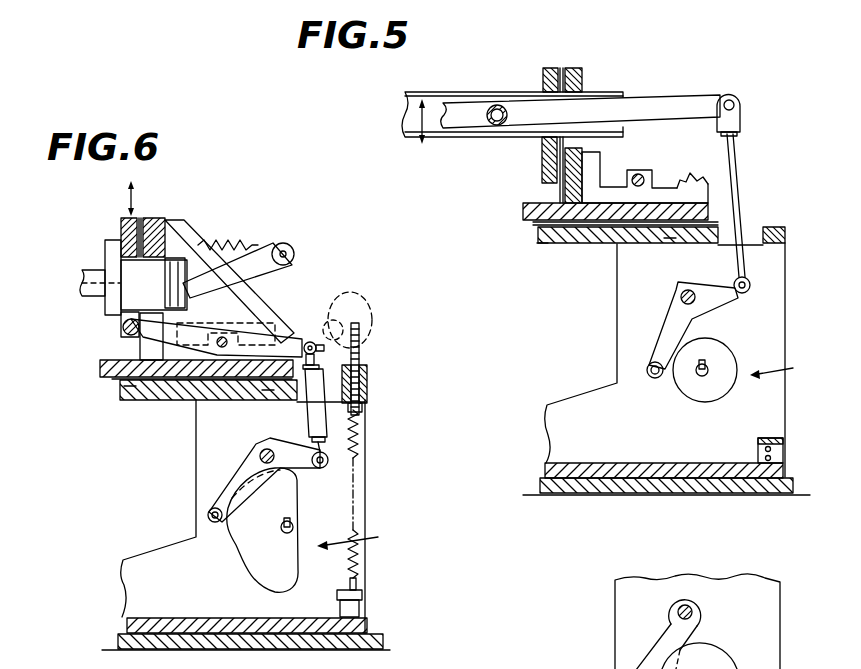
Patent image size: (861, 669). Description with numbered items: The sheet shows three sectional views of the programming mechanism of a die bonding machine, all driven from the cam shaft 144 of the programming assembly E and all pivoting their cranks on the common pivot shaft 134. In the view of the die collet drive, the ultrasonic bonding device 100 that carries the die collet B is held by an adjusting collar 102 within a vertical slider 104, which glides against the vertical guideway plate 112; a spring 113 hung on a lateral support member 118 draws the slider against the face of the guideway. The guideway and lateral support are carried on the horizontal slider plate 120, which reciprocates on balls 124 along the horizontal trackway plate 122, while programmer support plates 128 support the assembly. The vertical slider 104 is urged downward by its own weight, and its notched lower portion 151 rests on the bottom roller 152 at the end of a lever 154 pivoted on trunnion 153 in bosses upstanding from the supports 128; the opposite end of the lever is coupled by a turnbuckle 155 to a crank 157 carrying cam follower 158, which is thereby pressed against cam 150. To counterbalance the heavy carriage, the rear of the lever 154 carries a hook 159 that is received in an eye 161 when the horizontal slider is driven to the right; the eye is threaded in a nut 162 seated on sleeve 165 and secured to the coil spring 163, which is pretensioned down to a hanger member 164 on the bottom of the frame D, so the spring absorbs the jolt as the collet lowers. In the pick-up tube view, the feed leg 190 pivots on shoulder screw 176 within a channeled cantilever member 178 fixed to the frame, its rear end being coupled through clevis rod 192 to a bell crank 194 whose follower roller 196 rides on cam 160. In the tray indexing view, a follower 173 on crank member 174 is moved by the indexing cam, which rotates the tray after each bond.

In FIG. 6, the ultrasonic energy vibratory device 100 is at (160, 292).
In FIG. 6, the adjusting collar 102 is at (106, 245).
In FIG. 6, the vertical slider 104 is at (120, 222).
In FIG. 5, the vertical slider 104 is at (546, 67).
In FIG. 6, the vertical guideway plate 112 is at (152, 222).
In FIG. 5, the vertical guideway plate 112 is at (578, 67).
In FIG. 6, the spring 113 is at (263, 233).
In FIG. 6, the lateral support member 118 is at (295, 257).
In FIG. 5, the lateral support member 118 is at (713, 158).
In FIG. 6, the horizontal slider plate 120 is at (100, 370).
In FIG. 5, the horizontal slider plate 120 is at (523, 210).
In FIG. 6, the horizontal trackway plate 122 is at (112, 397).
In FIG. 5, the horizontal trackway plate 122 is at (538, 238).
In FIG. 6, the balls 124 is at (130, 388).
In FIG. 5, the balls 124 is at (542, 243).
In FIG. 6, the programmer support plate 128 is at (125, 587).
In FIG. 5, the programmer support plate 128 is at (584, 399).
In FIG. 6, the pivot shaft 134 is at (260, 451).
In FIG. 5, the pivot shaft 134 is at (682, 293).
In FIG. 8, the pivot shaft 134 is at (693, 611).
In FIG. 6, the cam shaft 144 is at (295, 519).
In FIG. 5, the cam shaft 144 is at (707, 363).
In FIG. 8, the cam shaft 144 is at (727, 668).
In FIG. 6, the cam 150 is at (252, 555).
In FIG. 6, the notched lower portion 151 is at (121, 322).
In FIG. 6, the bottom roller 152 is at (130, 337).
In FIG. 6, the trunnion 153 is at (226, 312).
In FIG. 5, the trunnion 153 is at (656, 152).
In FIG. 6, the lever 154 is at (263, 328).
In FIG. 6, the turnbuckle 155 is at (360, 337).
In FIG. 6, the crank 157 is at (236, 472).
In FIG. 6, the cam follower 158 is at (208, 515).
In FIG. 6, the hook 159 is at (372, 318).
In FIG. 5, the cam 160 is at (707, 402).
In FIG. 6, the eye 161 is at (360, 350).
In FIG. 6, the nut 162 is at (368, 372).
In FIG. 6, the coil spring 163 is at (363, 450).
In FIG. 6, the hanger member 164 is at (363, 594).
In FIG. 6, the sleeve 165 is at (368, 396).
In FIG. 8, the follower 173 is at (641, 653).
In FIG. 8, the crank member 174 is at (668, 607).
In FIG. 5, the shoulder screw 176 is at (517, 79).
In FIG. 5, the channeled cantilever member 178 is at (466, 76).
In FIG. 5, the feed leg 190 is at (666, 100).
In FIG. 5, the clevis rod 192 is at (738, 164).
In FIG. 5, the bell crank 194 is at (673, 318).
In FIG. 5, the follower roller 196 is at (655, 378).
In FIG. 6, the die collet B is at (72, 285).
In FIG. 6, the frame D is at (378, 632).
In FIG. 5, the frame D is at (827, 450).
In FIG. 6, the programming assembly E is at (357, 539).
In FIG. 5, the programming assembly E is at (781, 372).